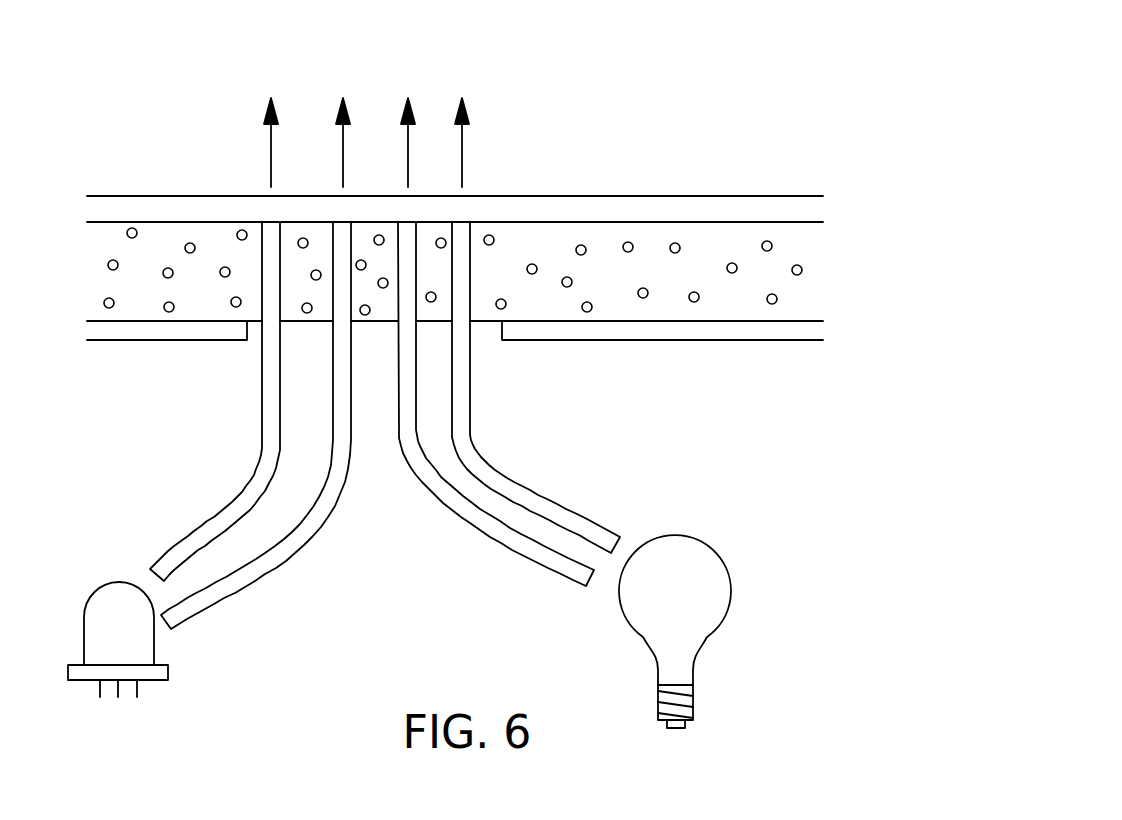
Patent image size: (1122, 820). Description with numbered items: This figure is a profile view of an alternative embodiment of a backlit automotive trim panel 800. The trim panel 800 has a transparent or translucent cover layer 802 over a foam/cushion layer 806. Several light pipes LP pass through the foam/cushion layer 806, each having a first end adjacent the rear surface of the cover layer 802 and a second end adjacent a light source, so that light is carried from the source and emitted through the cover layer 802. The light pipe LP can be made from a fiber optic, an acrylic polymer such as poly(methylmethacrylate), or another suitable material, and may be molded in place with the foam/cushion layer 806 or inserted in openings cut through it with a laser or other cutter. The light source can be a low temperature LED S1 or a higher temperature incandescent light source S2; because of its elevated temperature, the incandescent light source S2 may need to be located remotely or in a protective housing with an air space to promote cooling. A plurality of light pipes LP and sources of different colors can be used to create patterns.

The trim panel 800 is at (471, 213).
The cover layer 802 is at (773, 195).
The foam/cushion layer 806 is at (789, 298).
The light pipe LP is at (213, 508).
The LED S1 is at (155, 647).
The incandescent light source S2 is at (707, 638).